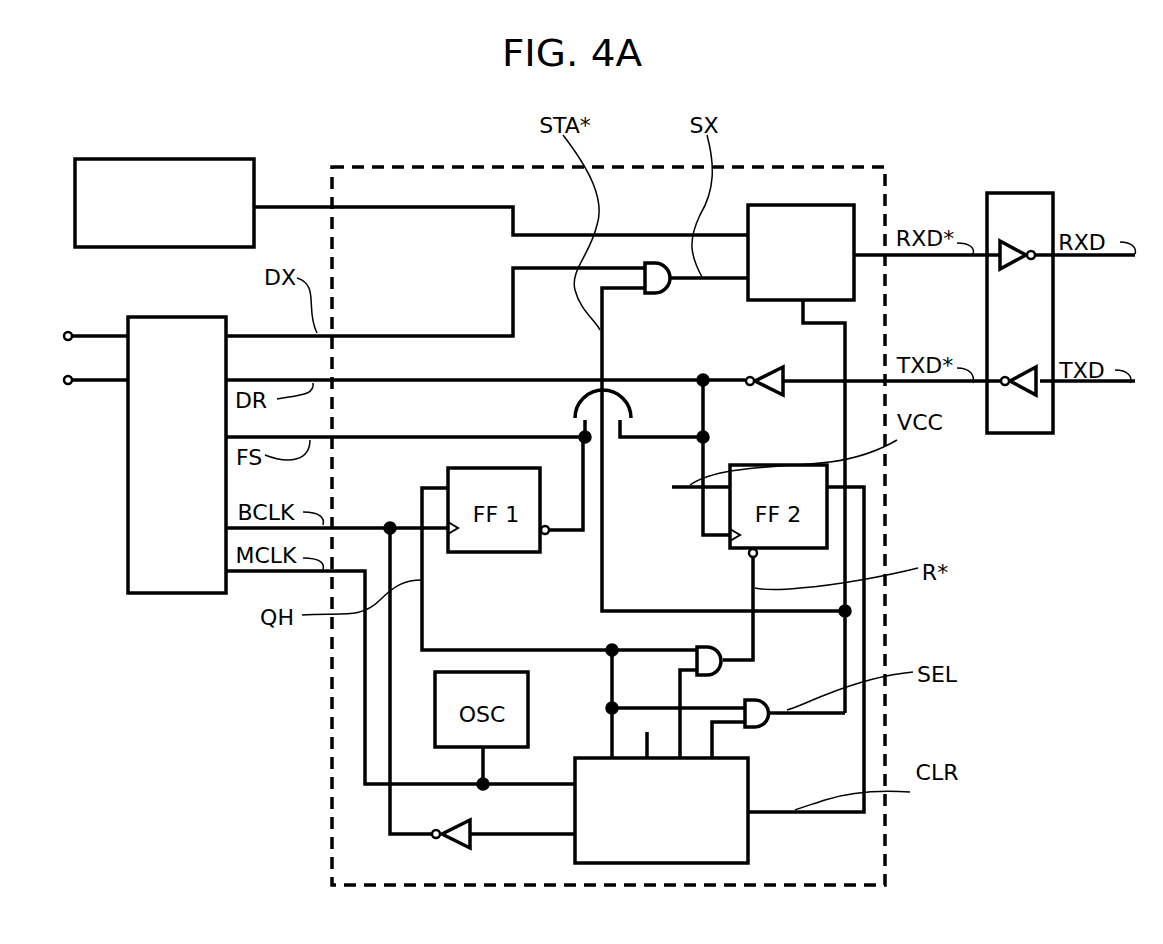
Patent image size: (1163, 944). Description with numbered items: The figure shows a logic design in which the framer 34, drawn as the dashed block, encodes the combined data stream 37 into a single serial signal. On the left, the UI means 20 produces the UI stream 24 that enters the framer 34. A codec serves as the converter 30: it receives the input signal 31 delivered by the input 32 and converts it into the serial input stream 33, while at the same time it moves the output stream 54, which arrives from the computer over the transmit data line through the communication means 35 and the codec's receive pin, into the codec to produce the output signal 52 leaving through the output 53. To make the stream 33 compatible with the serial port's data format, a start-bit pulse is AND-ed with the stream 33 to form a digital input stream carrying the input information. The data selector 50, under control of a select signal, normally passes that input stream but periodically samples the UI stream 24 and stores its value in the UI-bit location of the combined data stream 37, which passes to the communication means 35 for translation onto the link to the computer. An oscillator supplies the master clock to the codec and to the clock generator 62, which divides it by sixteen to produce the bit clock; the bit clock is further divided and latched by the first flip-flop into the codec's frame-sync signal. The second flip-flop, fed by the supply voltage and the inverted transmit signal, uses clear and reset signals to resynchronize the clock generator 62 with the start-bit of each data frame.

The UI means 20 is at (140, 158).
The UI stream 24 is at (280, 204).
The converter 30 is at (173, 593).
The input signal 31 is at (122, 333).
The input 32 is at (68, 332).
The input stream 33 is at (297, 333).
The framer 34 is at (813, 167).
The communication means 35 is at (1033, 193).
The combined data stream 37 is at (985, 252).
The data selector 50 is at (801, 459).
The output signal 52 is at (123, 379).
The output 53 is at (68, 385).
The output stream 54 is at (295, 378).
The clock generator 62 is at (661, 810).